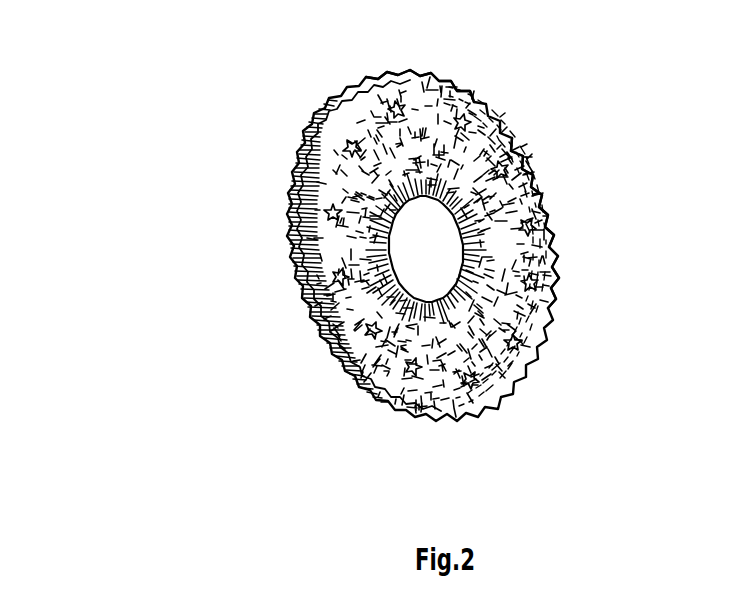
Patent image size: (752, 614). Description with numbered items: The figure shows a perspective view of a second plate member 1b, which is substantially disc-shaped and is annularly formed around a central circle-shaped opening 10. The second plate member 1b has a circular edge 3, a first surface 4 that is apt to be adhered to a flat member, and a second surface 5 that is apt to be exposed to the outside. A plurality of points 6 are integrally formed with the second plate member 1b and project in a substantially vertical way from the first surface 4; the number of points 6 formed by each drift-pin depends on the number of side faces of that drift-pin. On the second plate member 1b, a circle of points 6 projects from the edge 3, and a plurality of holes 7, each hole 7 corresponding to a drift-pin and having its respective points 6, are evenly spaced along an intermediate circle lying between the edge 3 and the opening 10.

The second plate member 1b is at (163, 370).
The circular edge 3 is at (355, 383).
The first surface 4 is at (549, 191).
The second surface 5 is at (298, 310).
The points 6 is at (292, 173).
The hole 7 is at (327, 113).
The central circle-shaped opening 10 is at (441, 73).